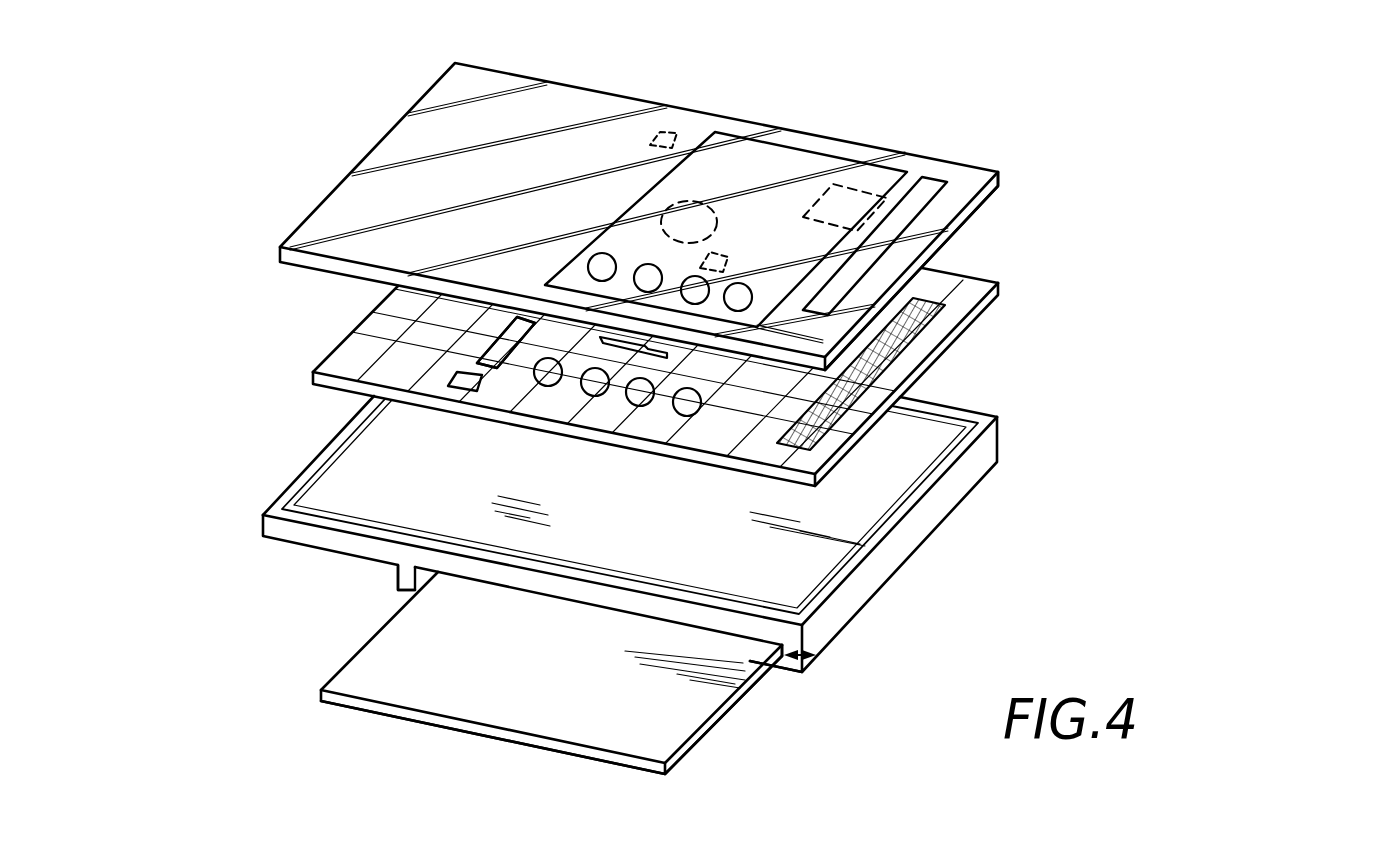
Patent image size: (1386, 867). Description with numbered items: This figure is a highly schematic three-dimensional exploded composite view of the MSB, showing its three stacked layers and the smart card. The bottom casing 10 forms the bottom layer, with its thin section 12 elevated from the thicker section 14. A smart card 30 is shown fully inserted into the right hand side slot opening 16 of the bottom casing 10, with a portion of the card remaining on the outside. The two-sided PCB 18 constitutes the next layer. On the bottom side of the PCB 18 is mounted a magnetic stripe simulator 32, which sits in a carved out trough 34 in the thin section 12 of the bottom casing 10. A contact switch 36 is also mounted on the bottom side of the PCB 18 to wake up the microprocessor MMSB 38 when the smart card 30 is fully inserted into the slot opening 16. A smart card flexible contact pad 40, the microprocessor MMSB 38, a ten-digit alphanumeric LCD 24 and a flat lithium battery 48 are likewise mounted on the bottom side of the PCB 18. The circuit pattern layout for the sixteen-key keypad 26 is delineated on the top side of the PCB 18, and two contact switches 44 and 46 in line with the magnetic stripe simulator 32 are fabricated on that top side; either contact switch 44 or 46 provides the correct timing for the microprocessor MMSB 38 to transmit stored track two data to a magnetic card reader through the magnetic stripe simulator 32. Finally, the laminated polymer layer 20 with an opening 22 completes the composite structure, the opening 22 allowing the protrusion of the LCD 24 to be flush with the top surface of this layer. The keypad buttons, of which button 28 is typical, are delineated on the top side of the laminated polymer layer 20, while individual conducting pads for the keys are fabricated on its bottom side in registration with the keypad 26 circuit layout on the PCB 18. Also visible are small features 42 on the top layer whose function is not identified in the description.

The element MSB is at (1215, 598).
The bottom casing 10 is at (905, 547).
The thin section 12 is at (378, 593).
The thicker section 14 is at (702, 698).
The slot opening 16 is at (816, 655).
The two-sided PCB 18 is at (950, 294).
The laminated polymer layer 20 is at (453, 105).
The opening 22 is at (927, 187).
The alphanumeric LCD 24 is at (882, 364).
The keypad 26 is at (693, 218).
The keypad button 28 is at (600, 267).
The smart card 30 is at (736, 740).
The magnetic stripe simulator 32 is at (492, 345).
The carved out trough 34 is at (492, 345).
The contact switch 36 is at (823, 188).
The microprocessor MMSB 38 is at (658, 372).
The smart card flexible contact pad 40 is at (852, 188).
The indicator 42 is at (716, 254).
The contact switch 44 is at (452, 378).
The contact switch 46 is at (663, 135).
The flat lithium battery 48 is at (582, 386).